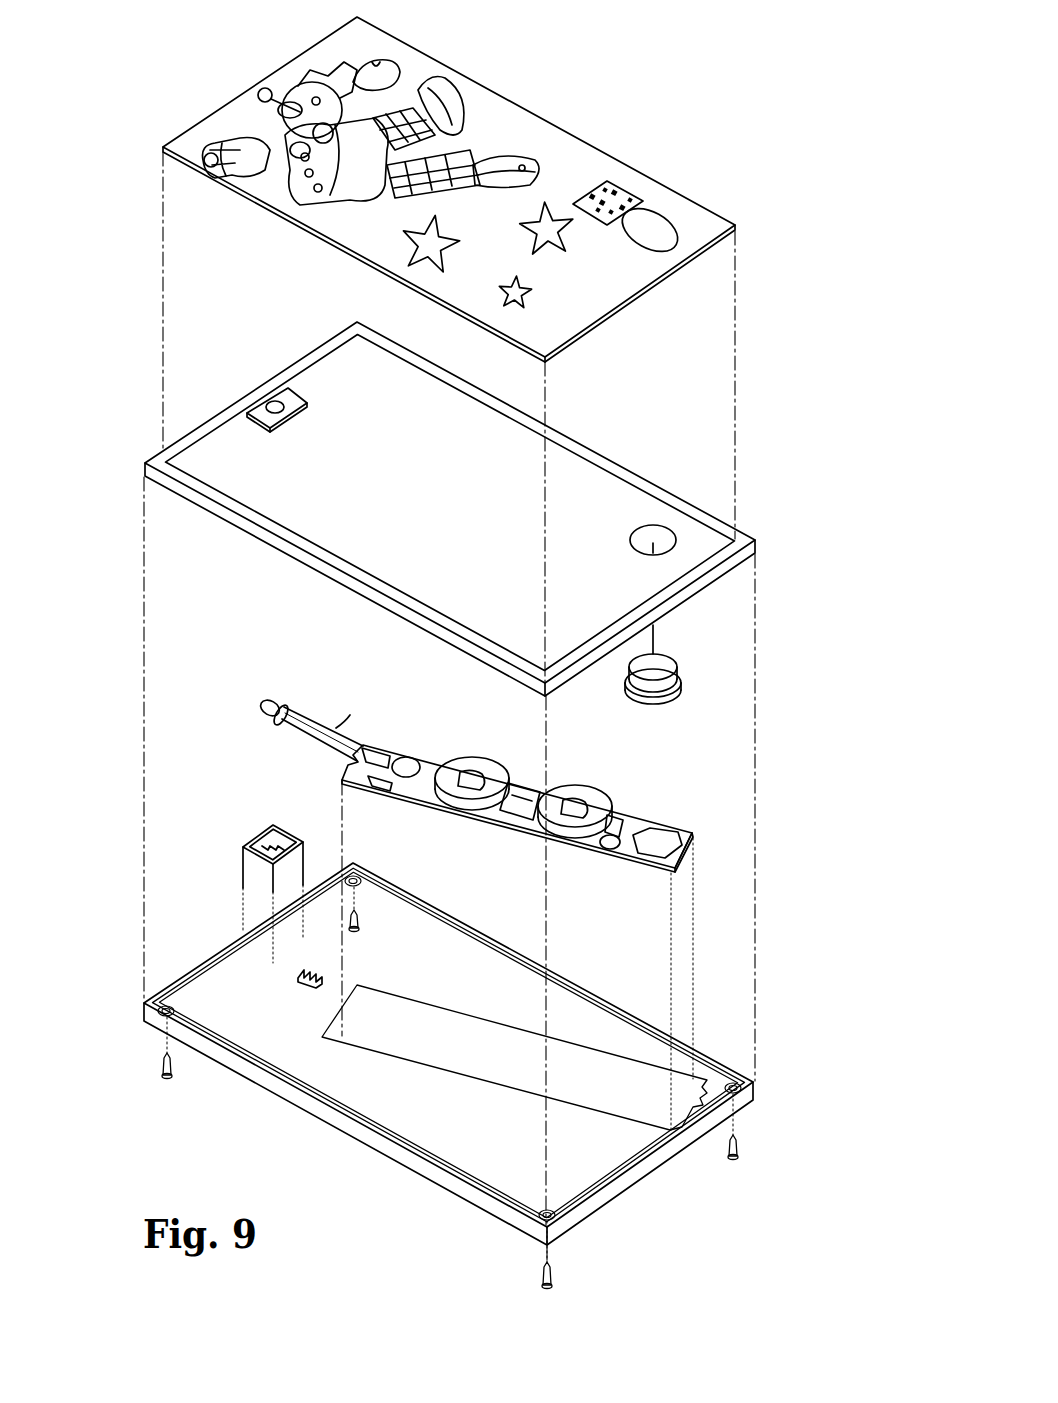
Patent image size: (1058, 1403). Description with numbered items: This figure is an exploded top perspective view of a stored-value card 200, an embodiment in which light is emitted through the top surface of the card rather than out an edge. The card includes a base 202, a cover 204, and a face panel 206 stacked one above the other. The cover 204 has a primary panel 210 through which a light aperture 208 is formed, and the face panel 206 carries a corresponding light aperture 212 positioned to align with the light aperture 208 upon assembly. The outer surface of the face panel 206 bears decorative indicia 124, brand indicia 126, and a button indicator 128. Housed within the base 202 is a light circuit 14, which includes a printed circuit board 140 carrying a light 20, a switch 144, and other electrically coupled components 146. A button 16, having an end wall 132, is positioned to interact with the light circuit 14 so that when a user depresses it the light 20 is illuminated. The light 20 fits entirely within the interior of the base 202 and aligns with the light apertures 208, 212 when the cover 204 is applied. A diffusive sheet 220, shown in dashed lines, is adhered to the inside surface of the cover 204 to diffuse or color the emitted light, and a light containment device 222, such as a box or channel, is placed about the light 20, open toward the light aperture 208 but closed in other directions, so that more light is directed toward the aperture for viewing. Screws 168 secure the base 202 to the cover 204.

The stored-value card 200 is at (104, 119).
The face panel 206 is at (707, 228).
The decorative indicia 124 is at (488, 145).
The light aperture 212 is at (303, 98).
The brand indicia 126 is at (630, 190).
The button indicator 128 is at (665, 220).
The cover 204 is at (628, 463).
The primary panel 210 is at (577, 480).
The light aperture 208 is at (275, 400).
The diffusive sheet 220 is at (263, 422).
The end wall 132 is at (668, 670).
The button 16 is at (676, 697).
The light circuit 14 is at (658, 793).
The printed circuit board 140 is at (660, 845).
The switch 144 is at (675, 868).
The light 20 is at (277, 698).
The component of light circuit 146 is at (330, 740).
The light containment device 222 is at (253, 845).
The base 202 is at (567, 1172).
The screw 168 is at (740, 1153).